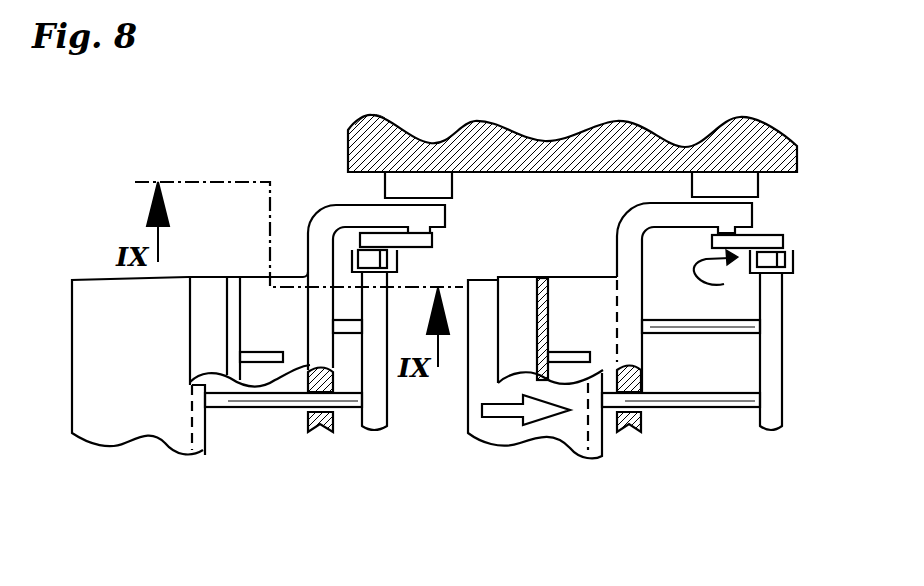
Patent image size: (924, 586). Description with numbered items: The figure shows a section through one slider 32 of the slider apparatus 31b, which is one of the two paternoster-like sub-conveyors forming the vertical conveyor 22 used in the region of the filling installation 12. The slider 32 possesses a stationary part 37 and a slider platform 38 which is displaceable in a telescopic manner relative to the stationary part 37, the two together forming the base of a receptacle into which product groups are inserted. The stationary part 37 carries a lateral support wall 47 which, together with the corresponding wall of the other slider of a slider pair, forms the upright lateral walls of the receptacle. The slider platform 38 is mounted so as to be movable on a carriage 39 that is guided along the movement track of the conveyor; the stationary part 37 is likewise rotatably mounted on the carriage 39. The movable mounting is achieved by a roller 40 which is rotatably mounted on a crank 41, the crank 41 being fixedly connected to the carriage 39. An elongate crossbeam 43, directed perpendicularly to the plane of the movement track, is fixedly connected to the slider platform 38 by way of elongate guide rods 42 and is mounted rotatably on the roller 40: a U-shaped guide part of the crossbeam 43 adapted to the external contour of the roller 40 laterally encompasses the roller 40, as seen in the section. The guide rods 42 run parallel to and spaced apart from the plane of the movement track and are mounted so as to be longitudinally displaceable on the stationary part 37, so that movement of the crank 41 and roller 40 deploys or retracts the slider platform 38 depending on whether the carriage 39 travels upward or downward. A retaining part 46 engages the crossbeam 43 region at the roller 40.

The filling installation 12 is at (583, 76).
The vertical conveyor 22 is at (632, 105).
The slider apparatus 31b is at (394, 132).
The slider 32 is at (599, 477).
The stationary part 37 is at (330, 228).
The slider platform 38 is at (503, 433).
The carriage 39 is at (743, 188).
The roller 40 is at (765, 257).
The crank 41 is at (767, 240).
The guide rod 42 is at (273, 402).
The crossbeam 43 is at (770, 408).
The clip 46 is at (793, 262).
The lateral support wall 47 is at (235, 287).